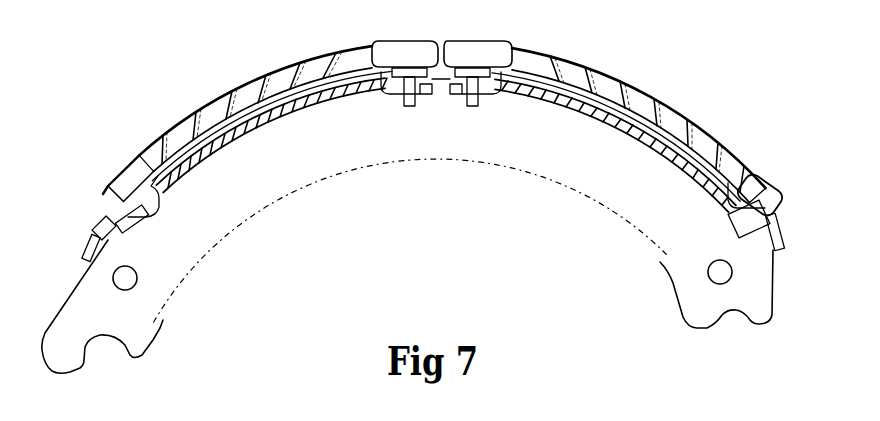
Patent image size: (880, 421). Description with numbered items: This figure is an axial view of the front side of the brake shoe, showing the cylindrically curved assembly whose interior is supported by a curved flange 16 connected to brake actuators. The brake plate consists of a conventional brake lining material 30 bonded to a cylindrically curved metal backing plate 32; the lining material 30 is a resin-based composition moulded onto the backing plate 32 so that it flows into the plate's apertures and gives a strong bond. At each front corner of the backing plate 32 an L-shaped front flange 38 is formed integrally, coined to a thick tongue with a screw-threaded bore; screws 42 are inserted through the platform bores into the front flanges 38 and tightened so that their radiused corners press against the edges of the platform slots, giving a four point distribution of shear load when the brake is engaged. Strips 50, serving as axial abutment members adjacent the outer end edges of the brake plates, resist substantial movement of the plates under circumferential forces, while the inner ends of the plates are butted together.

The curved flange 16 is at (577, 202).
The brake lining material 30 is at (235, 92).
The backing plate 32 is at (212, 117).
The front flange 38 is at (429, 108).
The screw 42 is at (406, 110).
The strip 50 is at (103, 208).